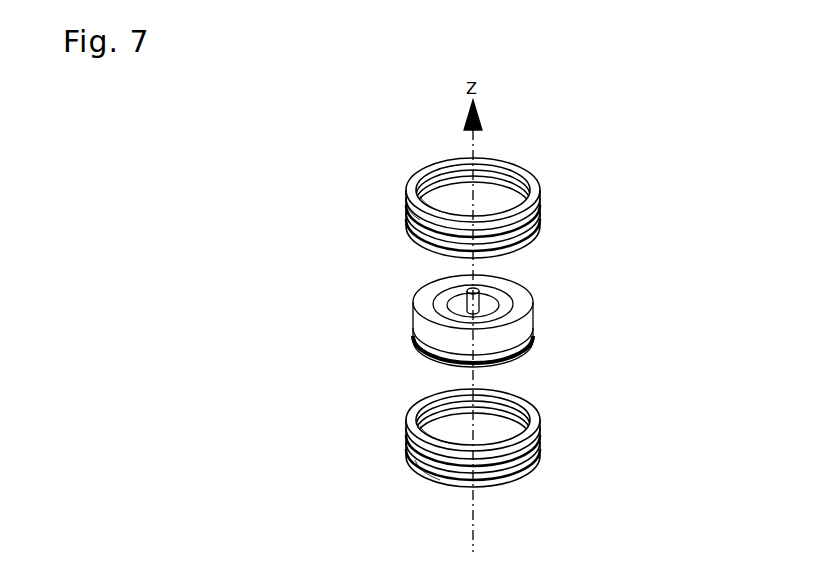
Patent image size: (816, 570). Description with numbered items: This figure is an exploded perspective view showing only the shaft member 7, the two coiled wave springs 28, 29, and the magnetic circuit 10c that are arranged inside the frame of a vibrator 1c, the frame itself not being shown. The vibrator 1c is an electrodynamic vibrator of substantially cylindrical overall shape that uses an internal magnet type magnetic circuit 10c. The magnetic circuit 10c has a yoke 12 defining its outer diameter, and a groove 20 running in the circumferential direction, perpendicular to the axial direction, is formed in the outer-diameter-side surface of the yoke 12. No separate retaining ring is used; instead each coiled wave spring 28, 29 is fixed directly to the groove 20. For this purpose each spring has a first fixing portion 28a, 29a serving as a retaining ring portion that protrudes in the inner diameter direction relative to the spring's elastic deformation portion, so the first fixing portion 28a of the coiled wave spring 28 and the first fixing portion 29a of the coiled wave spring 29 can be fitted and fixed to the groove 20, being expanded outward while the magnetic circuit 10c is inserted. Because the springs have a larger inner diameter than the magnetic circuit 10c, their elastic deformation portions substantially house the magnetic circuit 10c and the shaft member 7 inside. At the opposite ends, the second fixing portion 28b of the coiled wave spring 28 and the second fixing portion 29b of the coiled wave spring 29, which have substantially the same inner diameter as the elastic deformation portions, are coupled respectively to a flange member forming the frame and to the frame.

The vibrator 1c is at (268, 146).
The shaft member 7 is at (463, 288).
The magnetic circuit 10c is at (543, 309).
The yoke 12 is at (527, 298).
The groove 20 is at (533, 333).
The coiled wave spring 28 is at (541, 200).
The first fixing portion 28a is at (420, 211).
The second fixing portion 28b is at (407, 212).
The coiled wave spring 29 is at (541, 452).
The first fixing portion 29a is at (418, 443).
The second fixing portion 29b is at (430, 483).